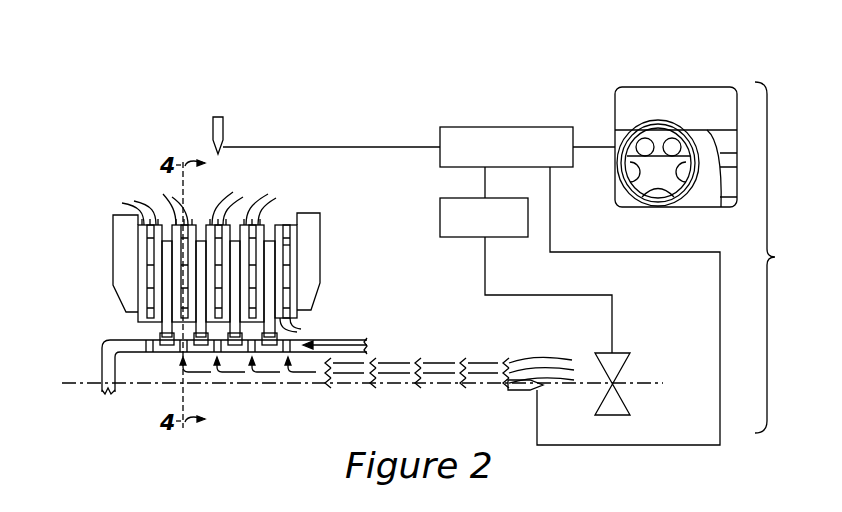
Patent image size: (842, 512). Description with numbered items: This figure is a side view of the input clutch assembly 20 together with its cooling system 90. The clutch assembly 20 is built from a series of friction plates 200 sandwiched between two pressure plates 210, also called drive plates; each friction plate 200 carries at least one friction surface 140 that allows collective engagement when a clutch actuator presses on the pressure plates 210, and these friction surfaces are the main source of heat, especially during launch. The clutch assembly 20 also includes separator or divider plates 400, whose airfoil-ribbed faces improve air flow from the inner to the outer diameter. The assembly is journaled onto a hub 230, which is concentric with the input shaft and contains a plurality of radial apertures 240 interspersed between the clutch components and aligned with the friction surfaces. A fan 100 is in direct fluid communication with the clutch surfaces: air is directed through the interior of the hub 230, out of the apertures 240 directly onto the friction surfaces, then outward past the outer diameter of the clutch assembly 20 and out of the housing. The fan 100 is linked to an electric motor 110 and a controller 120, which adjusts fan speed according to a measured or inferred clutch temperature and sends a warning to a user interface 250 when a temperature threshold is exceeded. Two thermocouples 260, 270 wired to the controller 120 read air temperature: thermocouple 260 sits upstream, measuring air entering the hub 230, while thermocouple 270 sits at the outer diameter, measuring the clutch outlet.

The input clutch assembly 20 is at (120, 168).
The cooling system 90 is at (778, 257).
The fan 100 is at (620, 358).
The electric motor 110 is at (440, 217).
The controller 120 is at (458, 127).
The friction surface 140 is at (290, 253).
The friction plates 200 is at (202, 253).
The pressure plates 210 is at (117, 238).
The hub 230 is at (105, 340).
The radial apertures 240 is at (362, 344).
The user interface 250 is at (688, 123).
The thermocouple 260 is at (520, 392).
The thermocouple 270 is at (223, 128).
The divider plate 400 is at (325, 328).